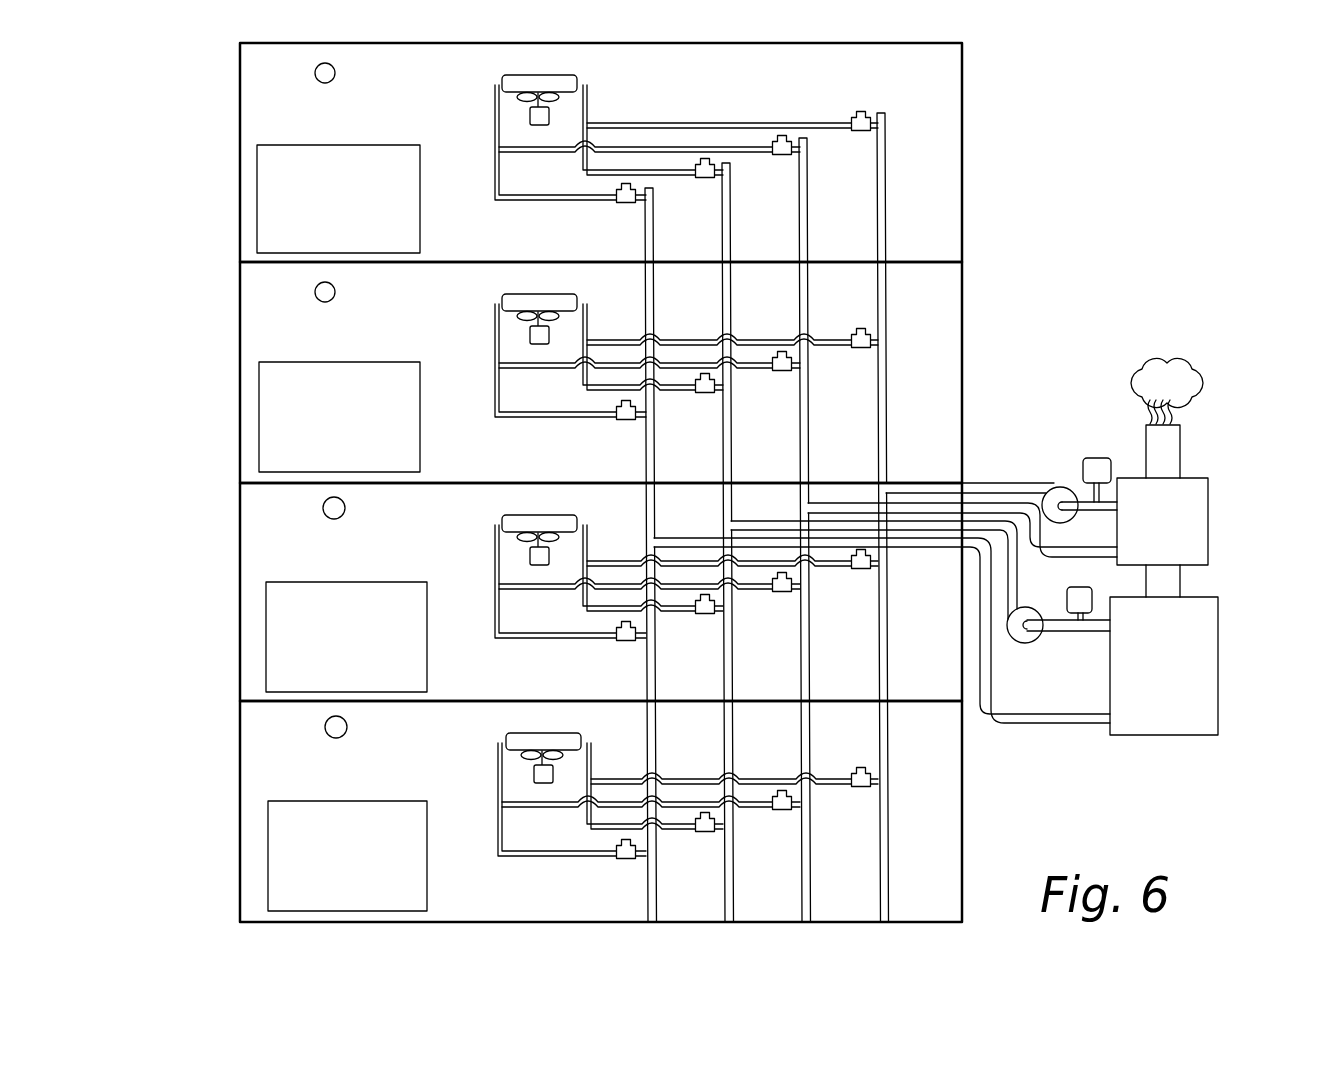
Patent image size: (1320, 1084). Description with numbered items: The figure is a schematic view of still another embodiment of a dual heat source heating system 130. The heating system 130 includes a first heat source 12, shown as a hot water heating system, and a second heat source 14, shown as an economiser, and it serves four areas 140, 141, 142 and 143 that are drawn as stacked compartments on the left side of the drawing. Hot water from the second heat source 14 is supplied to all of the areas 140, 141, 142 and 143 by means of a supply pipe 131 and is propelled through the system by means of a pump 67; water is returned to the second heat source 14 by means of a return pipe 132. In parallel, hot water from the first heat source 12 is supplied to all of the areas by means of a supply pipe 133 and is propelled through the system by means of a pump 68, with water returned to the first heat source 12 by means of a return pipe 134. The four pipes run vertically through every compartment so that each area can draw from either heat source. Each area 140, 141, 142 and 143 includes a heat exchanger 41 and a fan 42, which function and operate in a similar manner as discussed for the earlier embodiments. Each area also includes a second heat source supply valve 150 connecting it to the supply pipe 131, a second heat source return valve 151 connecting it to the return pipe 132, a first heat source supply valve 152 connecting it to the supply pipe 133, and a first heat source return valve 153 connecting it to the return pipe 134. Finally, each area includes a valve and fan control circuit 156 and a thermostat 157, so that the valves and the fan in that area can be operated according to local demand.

The first heat source 12 is at (1212, 677).
The second heat source 14 is at (1210, 529).
The heat exchanger 41 is at (561, 81).
The fan 42 is at (538, 125).
The pump 67 is at (1066, 487).
The pump 68 is at (1022, 643).
The dual heat source heating system 130 is at (1092, 332).
The supply pipe 131 is at (887, 226).
The return pipe 132 is at (809, 243).
The supply pipe 133 is at (731, 243).
The return pipe 134 is at (654, 243).
The area 140 is at (245, 134).
The area 141 is at (245, 333).
The area 142 is at (246, 559).
The area 143 is at (246, 773).
The second heat source supply valve 150 is at (859, 111).
The second heat source return valve 151 is at (815, 109).
The first heat source supply valve 152 is at (707, 178).
The first heat source return valve 153 is at (628, 203).
The valve and fan control circuit 156 is at (452, 182).
The thermostat 157 is at (336, 72).